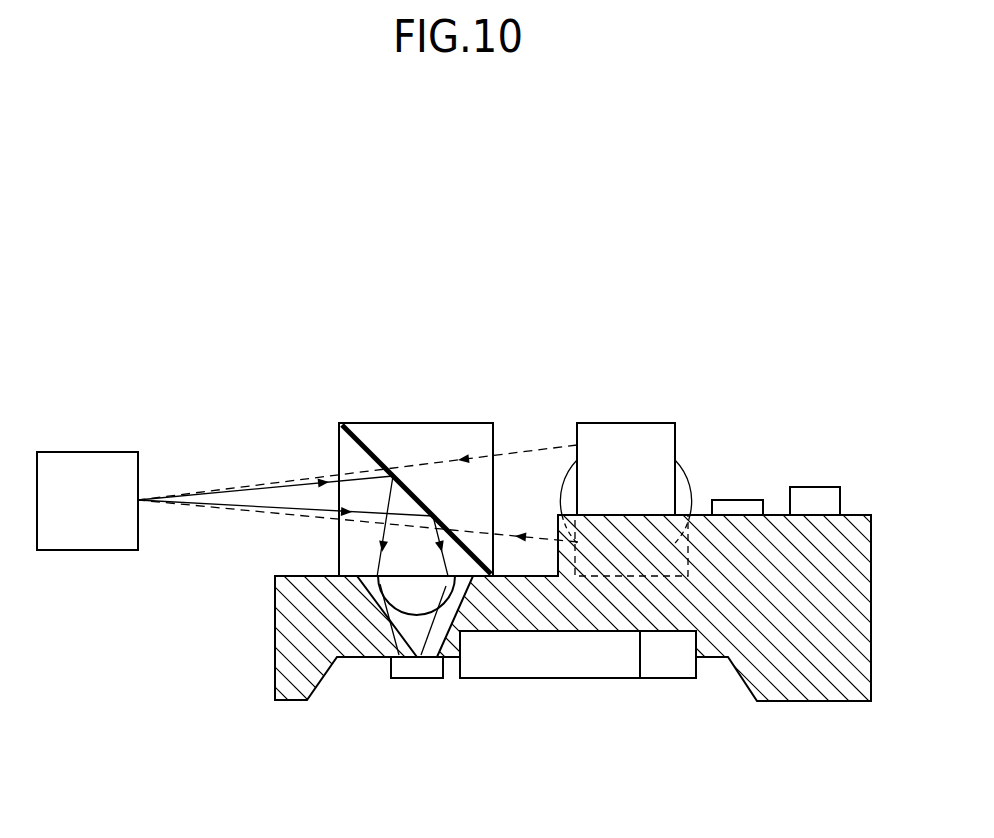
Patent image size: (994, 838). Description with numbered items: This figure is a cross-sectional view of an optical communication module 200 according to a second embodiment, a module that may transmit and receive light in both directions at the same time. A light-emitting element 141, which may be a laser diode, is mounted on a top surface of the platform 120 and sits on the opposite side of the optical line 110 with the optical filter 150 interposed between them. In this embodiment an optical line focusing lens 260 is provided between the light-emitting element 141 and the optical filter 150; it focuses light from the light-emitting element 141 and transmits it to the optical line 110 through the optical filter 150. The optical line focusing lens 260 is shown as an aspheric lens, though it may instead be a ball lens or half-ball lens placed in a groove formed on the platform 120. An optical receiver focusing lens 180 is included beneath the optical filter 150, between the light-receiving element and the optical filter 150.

The optical communication module 200 is at (211, 389).
The optical line 110 is at (74, 538).
The optical filter 150 is at (442, 413).
The optical line focusing lens 260 is at (640, 408).
The light-emitting element 141 is at (725, 493).
The optical receiver focusing lens 180 is at (383, 586).
The platform 120 is at (811, 707).